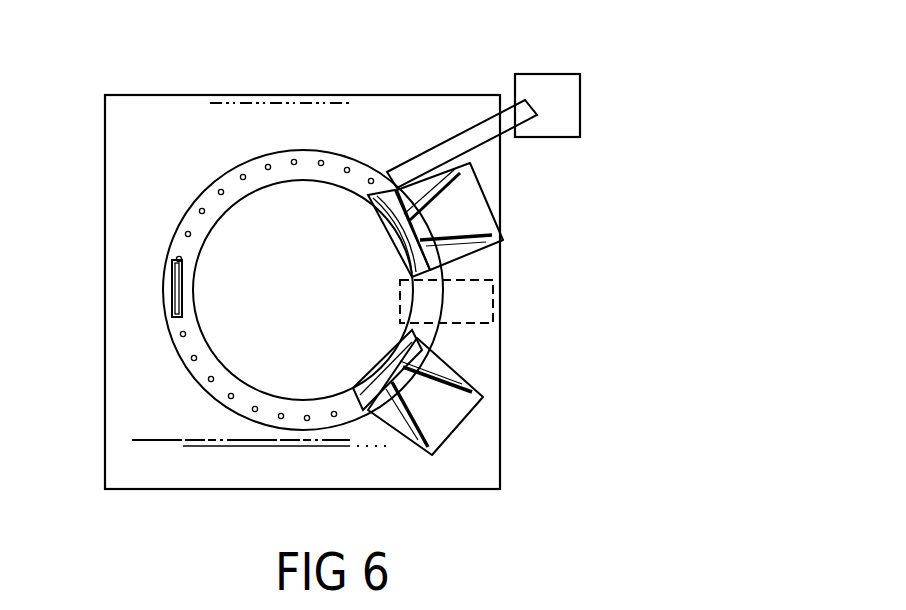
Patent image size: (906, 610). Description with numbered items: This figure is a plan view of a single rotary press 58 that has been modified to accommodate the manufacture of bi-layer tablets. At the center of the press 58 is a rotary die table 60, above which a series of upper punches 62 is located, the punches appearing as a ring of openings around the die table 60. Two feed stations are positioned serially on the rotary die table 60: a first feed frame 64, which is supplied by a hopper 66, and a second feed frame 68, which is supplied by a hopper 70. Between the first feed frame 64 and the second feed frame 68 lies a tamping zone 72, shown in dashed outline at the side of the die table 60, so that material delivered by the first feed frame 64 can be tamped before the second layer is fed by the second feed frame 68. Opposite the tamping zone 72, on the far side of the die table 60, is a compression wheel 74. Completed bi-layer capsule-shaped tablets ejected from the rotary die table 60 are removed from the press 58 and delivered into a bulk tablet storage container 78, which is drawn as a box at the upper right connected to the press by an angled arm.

The single rotary press 58 is at (299, 86).
The die table 60 is at (341, 152).
The upper punches 62 is at (234, 168).
The first feed frame 64 is at (379, 208).
The hopper 66 is at (478, 215).
The second feed frame 68 is at (360, 386).
The hopper 70 is at (453, 412).
The tamping zone 72 is at (486, 298).
The compression wheel 74 is at (166, 274).
The bulk tablet storage container 78 is at (583, 140).